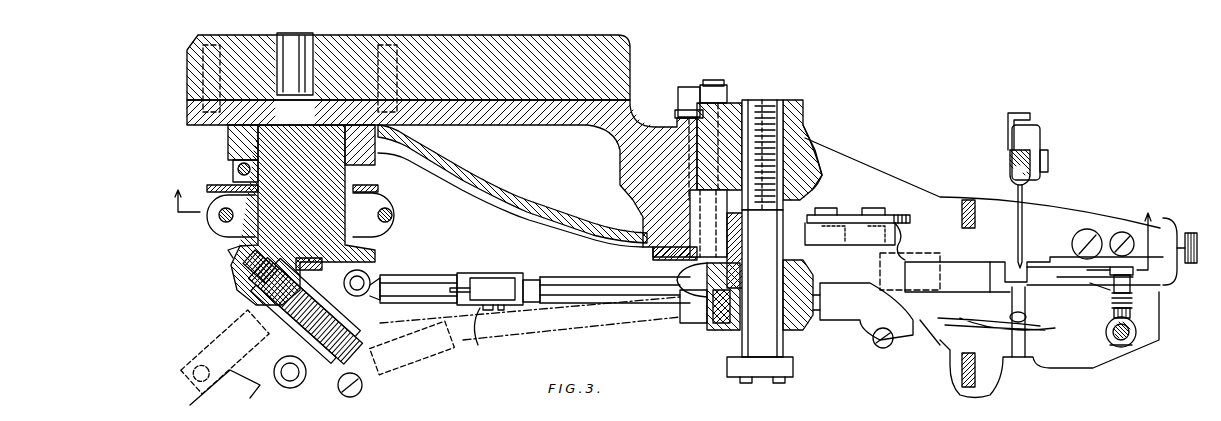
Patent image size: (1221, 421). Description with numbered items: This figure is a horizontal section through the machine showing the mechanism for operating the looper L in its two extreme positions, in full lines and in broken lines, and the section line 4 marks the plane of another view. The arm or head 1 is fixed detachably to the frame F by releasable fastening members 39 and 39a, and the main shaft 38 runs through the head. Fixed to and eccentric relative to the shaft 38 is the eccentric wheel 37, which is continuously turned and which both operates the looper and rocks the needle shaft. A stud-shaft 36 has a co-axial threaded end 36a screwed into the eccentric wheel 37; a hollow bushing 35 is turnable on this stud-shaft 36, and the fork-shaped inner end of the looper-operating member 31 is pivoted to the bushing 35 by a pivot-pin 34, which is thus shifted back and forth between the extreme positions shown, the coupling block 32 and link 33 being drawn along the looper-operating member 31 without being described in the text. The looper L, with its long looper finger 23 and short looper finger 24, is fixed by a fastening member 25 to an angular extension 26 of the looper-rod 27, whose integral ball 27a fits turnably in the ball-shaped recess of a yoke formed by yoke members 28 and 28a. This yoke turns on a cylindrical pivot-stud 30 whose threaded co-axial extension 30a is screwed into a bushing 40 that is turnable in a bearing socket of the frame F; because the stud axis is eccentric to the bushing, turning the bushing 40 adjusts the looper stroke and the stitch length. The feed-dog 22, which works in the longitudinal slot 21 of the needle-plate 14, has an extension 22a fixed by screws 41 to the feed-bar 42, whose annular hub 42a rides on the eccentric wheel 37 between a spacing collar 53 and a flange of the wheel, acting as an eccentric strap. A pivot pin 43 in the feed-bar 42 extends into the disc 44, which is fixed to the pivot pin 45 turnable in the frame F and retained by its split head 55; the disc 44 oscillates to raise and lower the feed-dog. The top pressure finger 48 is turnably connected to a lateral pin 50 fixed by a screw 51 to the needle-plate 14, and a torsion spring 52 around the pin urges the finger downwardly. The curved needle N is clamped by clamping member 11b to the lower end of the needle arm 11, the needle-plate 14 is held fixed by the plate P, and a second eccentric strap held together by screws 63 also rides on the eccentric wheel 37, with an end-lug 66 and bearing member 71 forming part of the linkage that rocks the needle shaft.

The arm or head 1 is at (622, 54).
The frame F is at (633, 104).
The main shaft 38 is at (308, 62).
The releasable fastening member 39 is at (188, 70).
The releasable fastening member 39a is at (398, 76).
The annular hub 42a is at (228, 141).
The spacing collar 53 is at (233, 167).
The section line 4 is at (661, 221).
The screws 63 is at (224, 216).
The eccentric wheel 37 is at (228, 249).
The feed-bar 42 is at (548, 211).
The pivot pin 43 is at (690, 208).
The disc 44 is at (653, 258).
The pivot pin 45 is at (700, 86).
The split head 55 is at (722, 84).
The bushing 40 is at (790, 106).
The threaded co-axial extension 30a is at (765, 100).
The pivot-stud 30 is at (783, 364).
The yoke member 28a is at (812, 195).
The yoke member 28 is at (700, 330).
The ball 27a is at (845, 258).
The needle arm 11 is at (1008, 168).
The clamping member 11b is at (1048, 170).
The curved needle N is at (1022, 220).
The screws 41 is at (868, 208).
The extension 22a is at (905, 222).
The feed-dog 22 is at (945, 268).
The longitudinal slot 21 is at (995, 265).
The top pressure finger 48 is at (1045, 268).
The needle-plate 14 is at (1095, 368).
The plate P is at (958, 378).
The looper L is at (932, 335).
The torsion spring 52 is at (1138, 300).
The lateral pin 50 is at (1114, 310).
The screw 51 is at (1137, 332).
The short looper finger 24 is at (1030, 318).
The long looper finger 23 is at (1034, 330).
The angular extension 26 is at (843, 323).
The fastening member 25 is at (875, 345).
The looper-operating member 31 is at (441, 276).
The coupling block 32 is at (482, 278).
The link 33 is at (476, 340).
The looper-rod 27 is at (580, 285).
The stud-shaft 36 is at (268, 292).
The threaded end 36a is at (268, 273).
The hollow bushing 35 is at (325, 288).
The pivot-pin 34 is at (362, 280).
The bearing member 71 is at (314, 396).
The end-lug 66 is at (225, 395).